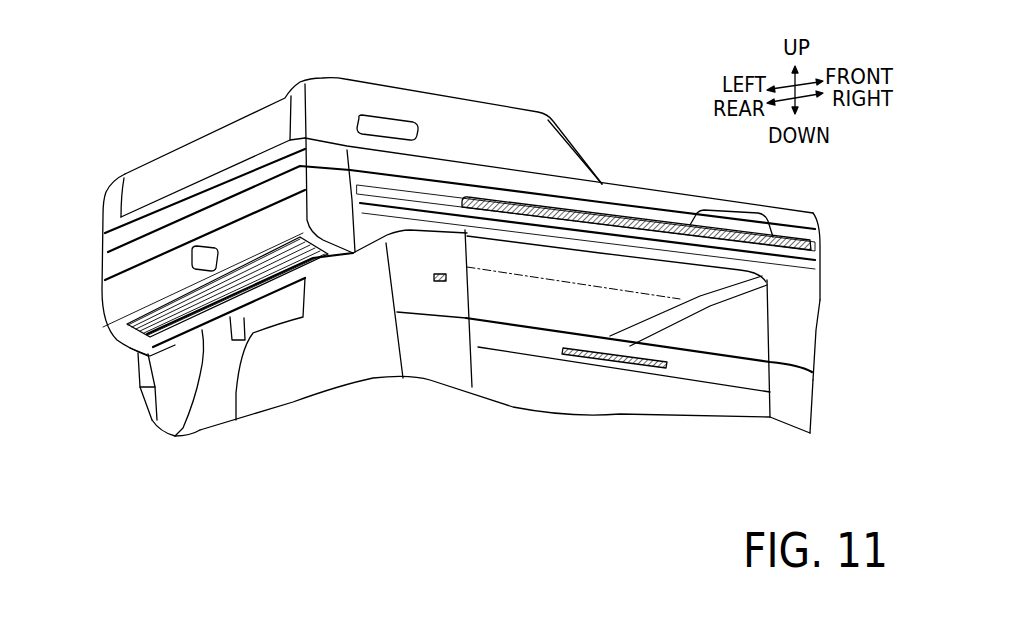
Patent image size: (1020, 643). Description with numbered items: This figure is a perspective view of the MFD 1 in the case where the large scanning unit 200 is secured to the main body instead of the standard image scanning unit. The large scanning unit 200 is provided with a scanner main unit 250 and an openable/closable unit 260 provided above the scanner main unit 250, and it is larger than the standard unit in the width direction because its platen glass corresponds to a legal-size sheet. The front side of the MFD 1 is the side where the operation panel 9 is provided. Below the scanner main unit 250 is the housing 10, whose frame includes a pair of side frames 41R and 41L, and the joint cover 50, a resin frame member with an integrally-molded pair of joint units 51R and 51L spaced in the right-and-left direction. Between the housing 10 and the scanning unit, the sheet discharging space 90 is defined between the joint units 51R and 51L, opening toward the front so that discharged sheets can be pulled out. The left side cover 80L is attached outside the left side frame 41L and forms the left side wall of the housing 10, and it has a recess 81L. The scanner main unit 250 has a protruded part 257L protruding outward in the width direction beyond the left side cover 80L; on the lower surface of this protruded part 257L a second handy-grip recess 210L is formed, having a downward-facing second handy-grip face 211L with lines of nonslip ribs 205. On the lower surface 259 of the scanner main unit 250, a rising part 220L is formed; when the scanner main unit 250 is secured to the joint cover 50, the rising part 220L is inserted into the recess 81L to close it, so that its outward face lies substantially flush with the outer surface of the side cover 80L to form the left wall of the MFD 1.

The MFD 1 is at (580, 90).
The large scanning unit 200 is at (226, 118).
The second handy-grip face 211L is at (242, 285).
The nonslip ribs 205 is at (180, 322).
The protruded part 257L is at (135, 292).
The second handy-grip recess 210L is at (143, 355).
The rising part 220L is at (177, 434).
The left side cover 80L is at (303, 380).
The recess 81L is at (243, 395).
The joint unit 51L is at (413, 297).
The side frame 41L is at (438, 357).
The lower surface 259 is at (577, 262).
The openable/closable unit 260 is at (642, 177).
The operation panel 9 is at (806, 214).
The scanner main unit 250 is at (832, 270).
The joint cover 50 is at (833, 310).
The sheet discharging space 90 is at (722, 325).
The joint unit 51R is at (797, 350).
The housing 10 is at (826, 411).
The side frame 41R is at (797, 403).